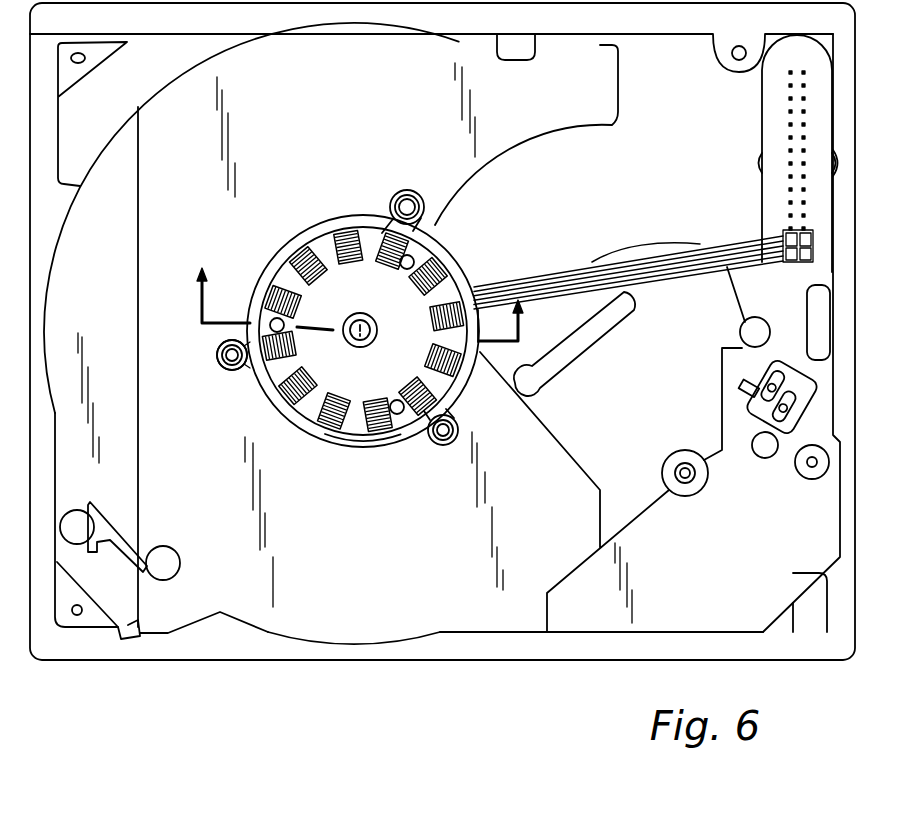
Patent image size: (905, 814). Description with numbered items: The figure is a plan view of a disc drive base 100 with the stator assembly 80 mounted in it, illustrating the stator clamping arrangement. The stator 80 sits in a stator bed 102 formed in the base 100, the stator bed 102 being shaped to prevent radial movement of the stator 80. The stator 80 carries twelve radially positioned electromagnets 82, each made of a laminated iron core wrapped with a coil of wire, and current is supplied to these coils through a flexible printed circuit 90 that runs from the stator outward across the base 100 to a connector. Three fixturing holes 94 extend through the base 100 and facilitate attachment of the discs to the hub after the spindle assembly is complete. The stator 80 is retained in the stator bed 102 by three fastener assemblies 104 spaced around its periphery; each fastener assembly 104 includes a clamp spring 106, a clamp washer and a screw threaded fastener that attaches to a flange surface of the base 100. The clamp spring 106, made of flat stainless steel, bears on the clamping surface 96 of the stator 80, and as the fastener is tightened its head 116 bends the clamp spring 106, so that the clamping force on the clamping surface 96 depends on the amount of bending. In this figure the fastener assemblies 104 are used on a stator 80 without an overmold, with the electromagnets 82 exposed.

The stator assembly 80 is at (352, 456).
The electromagnets 82 is at (320, 412).
The flexible printed circuit 90 is at (520, 286).
The fixturing holes 94 is at (414, 252).
The clamping surface 96 is at (250, 305).
The base 100 is at (305, 142).
The stator bed 102 is at (257, 305).
The fastener assemblies 104 is at (405, 191).
The clamp spring 106 is at (202, 323).
The head 116 is at (220, 350).